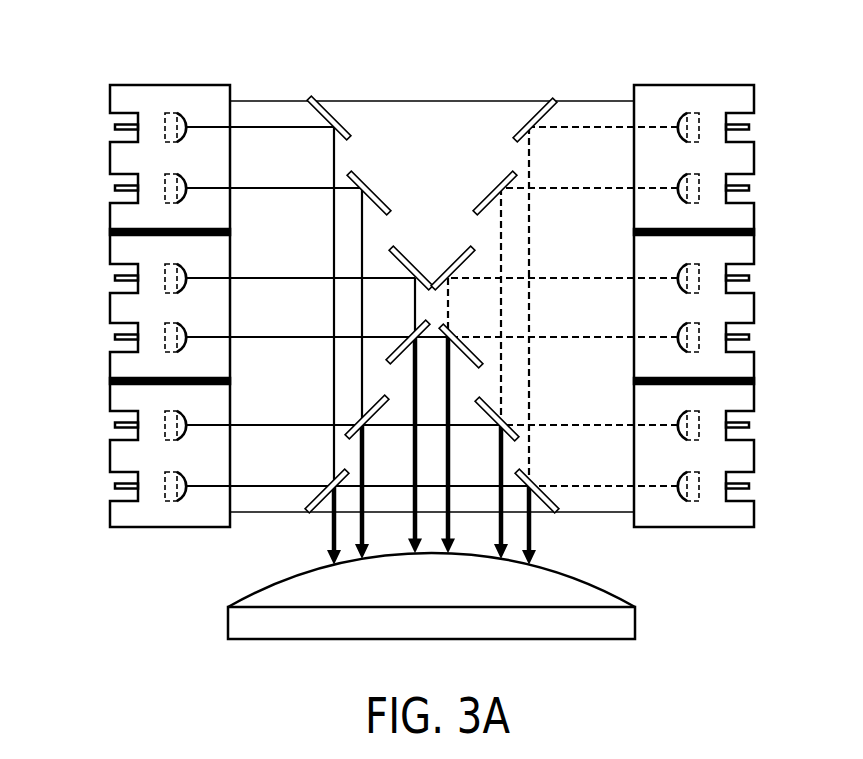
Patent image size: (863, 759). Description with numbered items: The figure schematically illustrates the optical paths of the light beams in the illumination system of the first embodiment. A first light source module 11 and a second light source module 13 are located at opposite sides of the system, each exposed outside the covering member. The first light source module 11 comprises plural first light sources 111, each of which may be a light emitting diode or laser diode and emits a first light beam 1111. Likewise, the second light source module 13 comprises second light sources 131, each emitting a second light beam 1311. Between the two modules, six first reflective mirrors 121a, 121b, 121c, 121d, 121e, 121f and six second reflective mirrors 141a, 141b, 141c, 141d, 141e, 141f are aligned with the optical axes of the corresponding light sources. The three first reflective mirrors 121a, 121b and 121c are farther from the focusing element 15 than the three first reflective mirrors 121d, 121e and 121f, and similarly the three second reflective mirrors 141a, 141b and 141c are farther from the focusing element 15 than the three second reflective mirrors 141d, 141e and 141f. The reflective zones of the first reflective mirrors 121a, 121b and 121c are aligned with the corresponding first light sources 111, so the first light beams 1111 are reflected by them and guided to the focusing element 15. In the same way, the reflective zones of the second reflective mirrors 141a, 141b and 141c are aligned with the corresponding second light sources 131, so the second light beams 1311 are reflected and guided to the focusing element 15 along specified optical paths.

The first light source module 11 is at (722, 100).
The first light source 111 is at (694, 127).
The first light beam 1111 is at (612, 125).
The second light source module 13 is at (158, 98).
The second light source 131 is at (173, 128).
The second light beam 1311 is at (262, 127).
The first reflective mirror 121a is at (534, 122).
The first reflective mirror 121b is at (494, 192).
The first reflective mirror 121c is at (455, 262).
The first reflective mirror 121d is at (407, 338).
The first reflective mirror 121e is at (365, 422).
The first reflective mirror 121f is at (330, 488).
The second reflective mirror 141a is at (330, 122).
The second reflective mirror 141b is at (370, 192).
The second reflective mirror 141c is at (410, 270).
The second reflective mirror 141d is at (458, 338).
The second reflective mirror 141e is at (500, 420).
The second reflective mirror 141f is at (567, 468).
The focusing element 15 is at (602, 623).